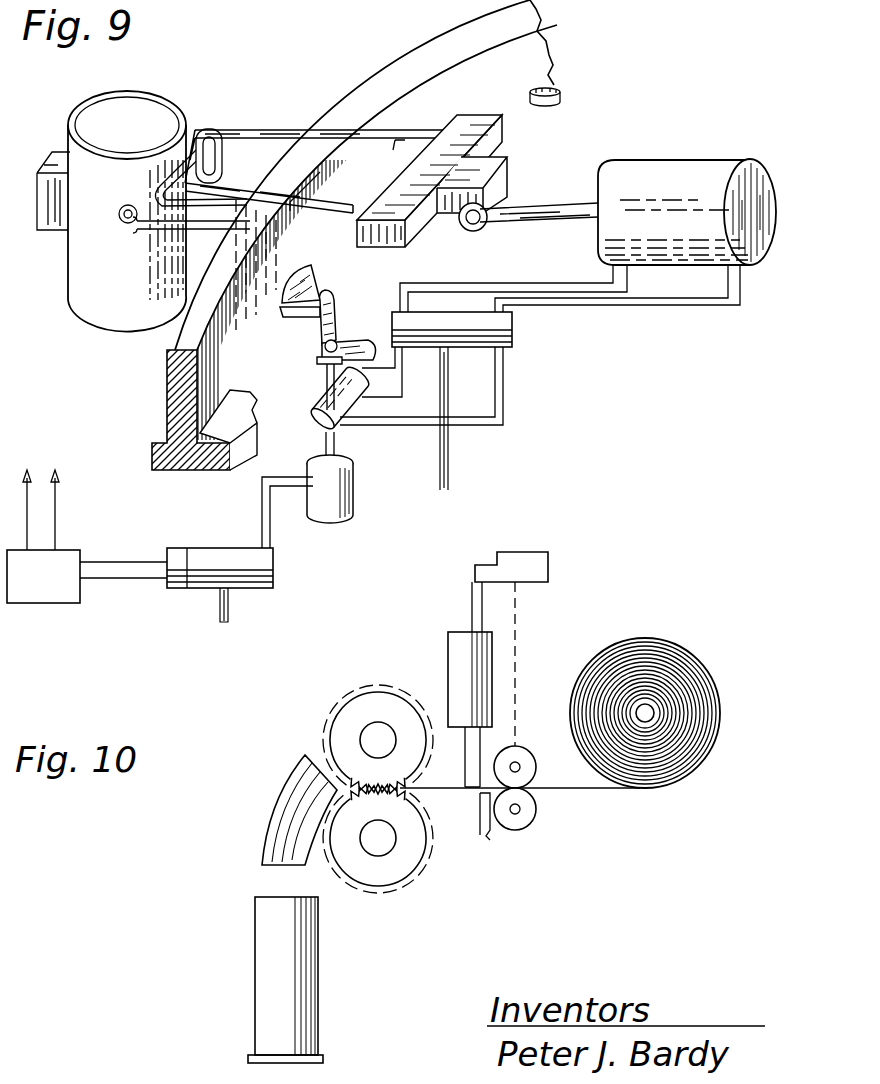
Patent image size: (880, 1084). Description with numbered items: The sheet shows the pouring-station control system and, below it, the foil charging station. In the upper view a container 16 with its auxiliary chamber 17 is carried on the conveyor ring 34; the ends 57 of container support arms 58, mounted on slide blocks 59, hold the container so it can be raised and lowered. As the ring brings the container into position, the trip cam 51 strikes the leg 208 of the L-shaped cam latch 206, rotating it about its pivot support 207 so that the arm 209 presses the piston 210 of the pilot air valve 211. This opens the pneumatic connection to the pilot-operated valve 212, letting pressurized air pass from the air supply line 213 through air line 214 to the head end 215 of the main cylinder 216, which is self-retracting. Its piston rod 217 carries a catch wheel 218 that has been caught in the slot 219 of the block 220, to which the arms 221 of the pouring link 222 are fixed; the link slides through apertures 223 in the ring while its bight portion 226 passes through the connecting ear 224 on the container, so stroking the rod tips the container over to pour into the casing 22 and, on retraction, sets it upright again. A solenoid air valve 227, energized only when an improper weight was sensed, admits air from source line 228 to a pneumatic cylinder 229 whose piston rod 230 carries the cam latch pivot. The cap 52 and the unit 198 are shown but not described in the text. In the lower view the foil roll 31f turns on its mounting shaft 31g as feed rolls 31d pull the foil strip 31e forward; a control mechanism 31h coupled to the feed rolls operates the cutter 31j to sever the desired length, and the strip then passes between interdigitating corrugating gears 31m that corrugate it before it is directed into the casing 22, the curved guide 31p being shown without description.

In FIG. 9, the container 16 is at (97, 258).
In FIG. 9, the supplementary or auxiliary chamber 17 is at (52, 228).
In FIG. 9, the conveyor ring 34 is at (182, 385).
In FIG. 9, the trip cam 51 is at (300, 313).
In FIG. 9, the cap 52 is at (557, 95).
In FIG. 9, the end of container support arm 57 is at (124, 209).
In FIG. 9, the container support arm 58 is at (157, 226).
In FIG. 9, the slide block 59 is at (119, 215).
In FIG. 9, the power unit 198 is at (50, 572).
In FIG. 9, the cam latch 206 is at (318, 362).
In FIG. 9, the pivot support 207 is at (334, 341).
In FIG. 9, the leg of cam latch 208 is at (328, 300).
In FIG. 9, the arm of cam latch 209 is at (353, 350).
In FIG. 9, the piston of pilot air valve 210 is at (395, 368).
In FIG. 9, the pilot air valve 211 is at (397, 397).
In FIG. 9, the pilot-operated valve 212 is at (492, 323).
In FIG. 9, the air supply line 213 is at (451, 443).
In FIG. 9, the air line 214 is at (611, 302).
In FIG. 9, the head end of main cylinder 215 is at (751, 190).
In FIG. 9, the main cylinder 216 is at (673, 206).
In FIG. 9, the piston rod 217 is at (563, 210).
In FIG. 9, the catch wheel 218 is at (479, 230).
In FIG. 9, the slot in block 219 is at (487, 206).
In FIG. 9, the block 220 is at (452, 140).
In FIG. 9, the arms of pouring link 221 is at (397, 134).
In FIG. 9, the pouring link 222 is at (266, 131).
In FIG. 9, the aperture in conveyor ring 223 is at (357, 137).
In FIG. 9, the connecting ear or bracket 224 is at (205, 128).
In FIG. 9, the bight portion of pouring link 226 is at (176, 160).
In FIG. 9, the solenoid air valve 227 is at (253, 566).
In FIG. 9, the source line 228 is at (218, 610).
In FIG. 9, the pneumatic cylinder 229 is at (340, 493).
In FIG. 9, the piston rod 230 is at (338, 446).
In FIG. 10, the cartridge or shell casing 22 is at (288, 950).
In FIG. 10, the feed rolls 31d is at (520, 762).
In FIG. 10, the foil strip 31e is at (602, 788).
In FIG. 10, the foil roll 31f is at (690, 690).
In FIG. 10, the mounting shaft 31g is at (637, 710).
In FIG. 10, the control mechanism 31h is at (530, 562).
In FIG. 10, the cutter or shear mechanism 31j is at (470, 680).
In FIG. 10, the corrugating gears 31m is at (373, 708).
In FIG. 10, the chute 31p is at (292, 806).